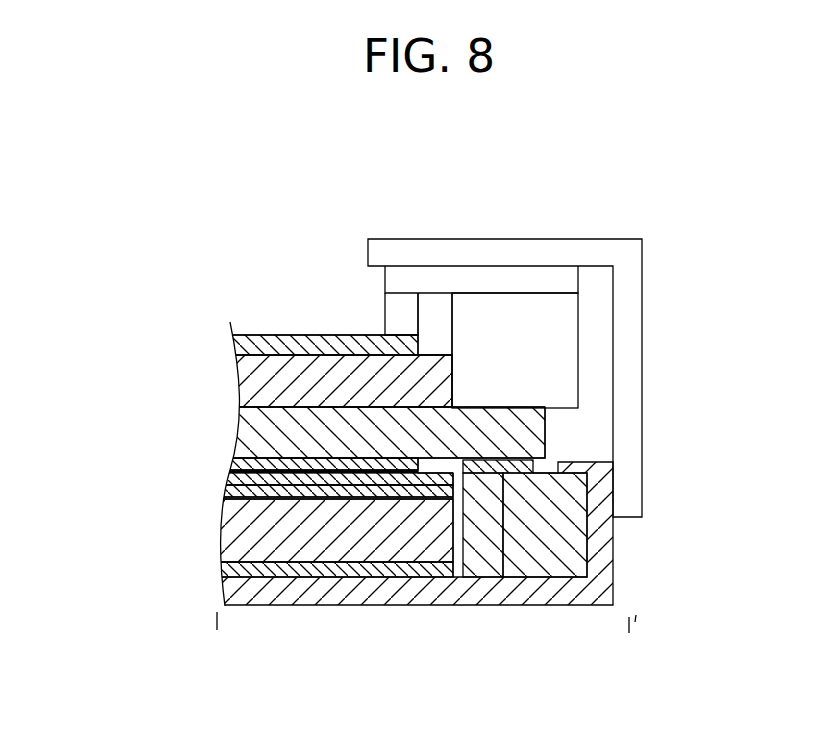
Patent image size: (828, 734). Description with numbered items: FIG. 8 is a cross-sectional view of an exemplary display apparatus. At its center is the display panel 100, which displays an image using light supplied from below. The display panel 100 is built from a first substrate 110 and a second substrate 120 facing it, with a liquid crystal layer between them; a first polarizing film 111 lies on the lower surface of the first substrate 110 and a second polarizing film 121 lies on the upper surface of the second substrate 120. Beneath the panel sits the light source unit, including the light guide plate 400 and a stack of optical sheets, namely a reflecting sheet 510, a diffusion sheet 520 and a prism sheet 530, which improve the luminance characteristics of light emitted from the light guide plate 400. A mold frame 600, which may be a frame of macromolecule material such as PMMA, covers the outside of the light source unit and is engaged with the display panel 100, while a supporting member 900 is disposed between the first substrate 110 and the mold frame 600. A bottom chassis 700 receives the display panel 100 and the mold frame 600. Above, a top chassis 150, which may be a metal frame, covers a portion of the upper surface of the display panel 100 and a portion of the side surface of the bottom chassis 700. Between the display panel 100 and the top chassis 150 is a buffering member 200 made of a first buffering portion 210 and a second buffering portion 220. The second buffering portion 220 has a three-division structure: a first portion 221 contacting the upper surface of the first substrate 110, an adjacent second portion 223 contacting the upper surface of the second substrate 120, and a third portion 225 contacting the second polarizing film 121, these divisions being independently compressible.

The display panel 100 is at (137, 330).
The first substrate 110 is at (250, 433).
The first polarizing film 111 is at (240, 465).
The second substrate 120 is at (251, 380).
The second polarizing film 121 is at (247, 347).
The top chassis 150 is at (632, 396).
The buffering member 200 is at (582, 140).
The first buffering portion 210 is at (557, 278).
The second buffering portion 220 is at (535, 181).
The first portion 221 is at (512, 310).
The second portion 223 is at (441, 311).
The third portion 225 is at (401, 310).
The light guide plate 400 is at (236, 527).
The reflecting sheet 510 is at (232, 568).
The diffusion sheet 520 is at (234, 490).
The prism sheet 530 is at (236, 482).
The mold frame 600 is at (563, 553).
The bottom chassis 700 is at (603, 562).
The supporting member 900 is at (503, 468).